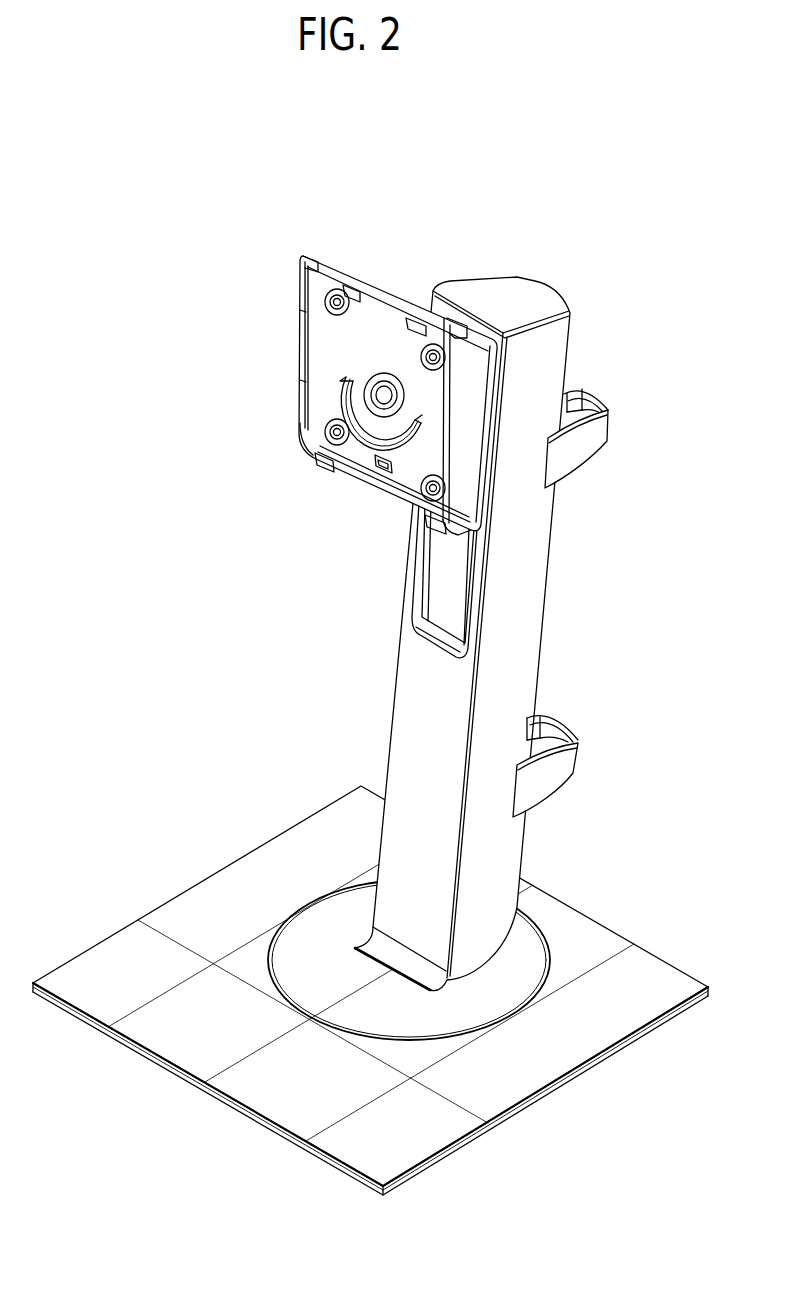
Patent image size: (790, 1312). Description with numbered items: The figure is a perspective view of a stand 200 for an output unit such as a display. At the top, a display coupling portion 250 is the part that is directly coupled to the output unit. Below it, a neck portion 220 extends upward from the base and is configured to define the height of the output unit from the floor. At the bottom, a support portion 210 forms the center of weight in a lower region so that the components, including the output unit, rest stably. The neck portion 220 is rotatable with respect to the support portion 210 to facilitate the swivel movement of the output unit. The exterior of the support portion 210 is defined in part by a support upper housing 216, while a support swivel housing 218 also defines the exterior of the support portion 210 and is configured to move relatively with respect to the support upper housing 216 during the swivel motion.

The stand 200 is at (98, 201).
The support portion 210 is at (158, 887).
The support upper housing 216 is at (657, 965).
The support swivel housing 218 is at (487, 1003).
The neck portion 220 is at (363, 638).
The display coupling portion 250 is at (258, 360).